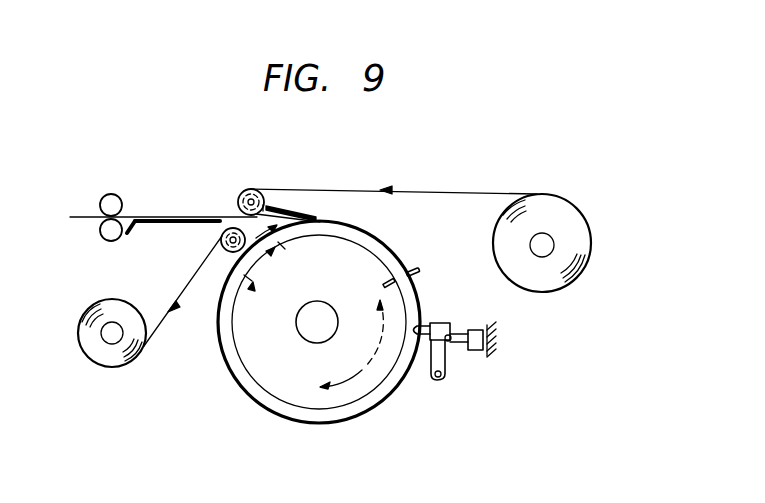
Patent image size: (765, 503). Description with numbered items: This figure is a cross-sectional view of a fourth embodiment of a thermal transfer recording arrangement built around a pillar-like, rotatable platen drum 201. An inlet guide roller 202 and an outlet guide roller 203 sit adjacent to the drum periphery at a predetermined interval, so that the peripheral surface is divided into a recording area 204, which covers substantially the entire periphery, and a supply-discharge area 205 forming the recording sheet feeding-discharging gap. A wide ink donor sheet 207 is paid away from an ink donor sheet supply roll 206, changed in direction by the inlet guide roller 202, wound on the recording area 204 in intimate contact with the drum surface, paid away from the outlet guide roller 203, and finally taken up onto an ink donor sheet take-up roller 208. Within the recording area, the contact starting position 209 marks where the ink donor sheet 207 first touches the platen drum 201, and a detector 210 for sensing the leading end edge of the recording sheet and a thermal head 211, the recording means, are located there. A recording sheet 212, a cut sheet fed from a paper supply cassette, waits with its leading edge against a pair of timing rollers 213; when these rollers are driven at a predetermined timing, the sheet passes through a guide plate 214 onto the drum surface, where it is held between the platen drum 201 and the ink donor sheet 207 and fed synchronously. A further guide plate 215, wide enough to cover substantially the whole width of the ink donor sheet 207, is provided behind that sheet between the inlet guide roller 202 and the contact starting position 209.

The platen drum 201 is at (297, 385).
The inlet guide roller 202 is at (243, 188).
The outlet guide roller 203 is at (220, 248).
The recording area 204 is at (379, 268).
The supply-discharge area 205 is at (265, 258).
The ink donor sheet supply roll 206 is at (535, 285).
The ink donor sheet 207 is at (435, 190).
The ink donor sheet take-up roller 208 is at (125, 365).
The contact starting position 209 is at (334, 224).
The detector 210 is at (402, 268).
The thermal head 211 is at (420, 322).
The recording sheet 212 is at (130, 217).
The pair of timing rollers 213 is at (115, 193).
The guide plate 214 is at (157, 223).
The guide plate 215 is at (278, 207).